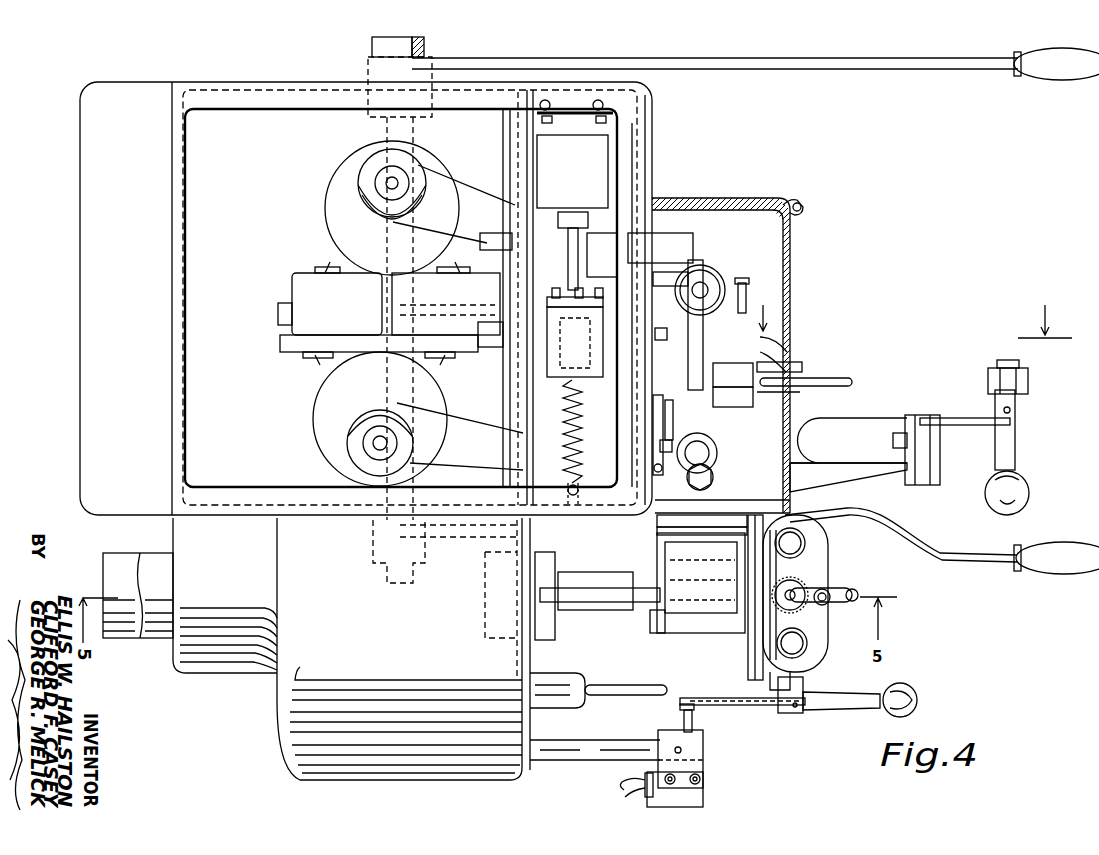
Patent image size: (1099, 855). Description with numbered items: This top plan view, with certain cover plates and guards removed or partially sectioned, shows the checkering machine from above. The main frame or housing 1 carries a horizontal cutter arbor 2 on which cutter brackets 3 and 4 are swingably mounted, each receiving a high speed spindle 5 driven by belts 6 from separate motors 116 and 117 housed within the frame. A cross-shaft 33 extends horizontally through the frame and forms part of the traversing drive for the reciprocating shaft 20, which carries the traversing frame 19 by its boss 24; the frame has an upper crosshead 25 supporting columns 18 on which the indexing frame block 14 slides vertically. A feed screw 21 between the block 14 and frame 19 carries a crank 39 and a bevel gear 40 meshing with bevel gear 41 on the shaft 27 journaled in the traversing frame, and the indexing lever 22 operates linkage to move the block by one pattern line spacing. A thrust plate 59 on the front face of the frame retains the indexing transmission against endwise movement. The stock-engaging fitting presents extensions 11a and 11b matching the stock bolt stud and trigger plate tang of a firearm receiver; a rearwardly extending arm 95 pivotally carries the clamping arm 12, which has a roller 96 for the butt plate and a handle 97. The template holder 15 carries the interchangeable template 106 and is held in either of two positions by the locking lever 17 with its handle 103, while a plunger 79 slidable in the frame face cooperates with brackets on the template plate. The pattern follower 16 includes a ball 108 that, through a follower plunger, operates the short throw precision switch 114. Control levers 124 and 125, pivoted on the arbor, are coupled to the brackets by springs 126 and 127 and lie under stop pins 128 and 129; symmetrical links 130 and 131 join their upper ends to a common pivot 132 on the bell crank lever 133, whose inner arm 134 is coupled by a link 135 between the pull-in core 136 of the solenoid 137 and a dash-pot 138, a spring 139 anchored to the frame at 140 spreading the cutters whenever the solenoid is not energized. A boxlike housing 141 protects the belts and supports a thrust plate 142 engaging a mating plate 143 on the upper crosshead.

The main frame 1 is at (652, 113).
The cutter arbor 2 is at (792, 388).
The cutter bracket 3 is at (725, 278).
The cutter bracket 4 is at (718, 452).
The spindle 5 is at (705, 262).
The belts 6 is at (470, 196).
The extension 11a is at (850, 381).
The extension 11b is at (788, 396).
The clamping arm 12 is at (960, 426).
The indexing frame block 14 is at (912, 312).
The template holder 15 is at (712, 698).
The pattern follower 16 is at (703, 752).
The locking lever 17 is at (849, 710).
The columns 18 is at (806, 548).
The traversing frame 19 is at (715, 640).
The reciprocating shaft 20 is at (604, 615).
The feed screw 21 is at (806, 594).
The indexing lever 22 is at (1066, 574).
The boss 24 is at (660, 635).
The upper crosshead 25 is at (812, 625).
The shaft 27 is at (576, 592).
The cross-shaft 33 is at (372, 42).
The crank 39 is at (858, 592).
The bevel gear 40 is at (830, 610).
The bevel gear 41 is at (818, 638).
The thrust plate 59 is at (540, 640).
The plunger 79 is at (624, 698).
The rearwardly extending arm 95 is at (852, 478).
The roller 96 is at (1028, 385).
The handle 97 is at (1030, 494).
The handle 103 is at (912, 690).
The template 106 is at (762, 708).
The ball 108 is at (682, 710).
The short throw precision switch 114 is at (650, 806).
The motor 116 is at (318, 428).
The motor 117 is at (326, 200).
The control lever 124 is at (683, 370).
The control lever 125 is at (790, 360).
The spring 126 is at (654, 468).
The spring 127 is at (745, 295).
The stop pin 128 is at (655, 446).
The stop pin 129 is at (788, 340).
The link 130 is at (678, 362).
The link 131 is at (753, 410).
The common pivot 132 is at (753, 385).
The bell crank lever 133 is at (660, 330).
The bell crank lever 134 is at (556, 294).
The link 135 is at (568, 250).
The pull in core 136 is at (558, 219).
The solenoid 137 is at (547, 167).
The dash-pot 138 is at (550, 365).
The spring 139 is at (563, 420).
The anchor 140 is at (566, 490).
The boxlike housing 141 is at (790, 250).
The thrust plate 142 is at (657, 520).
The mating plate 143 is at (660, 535).